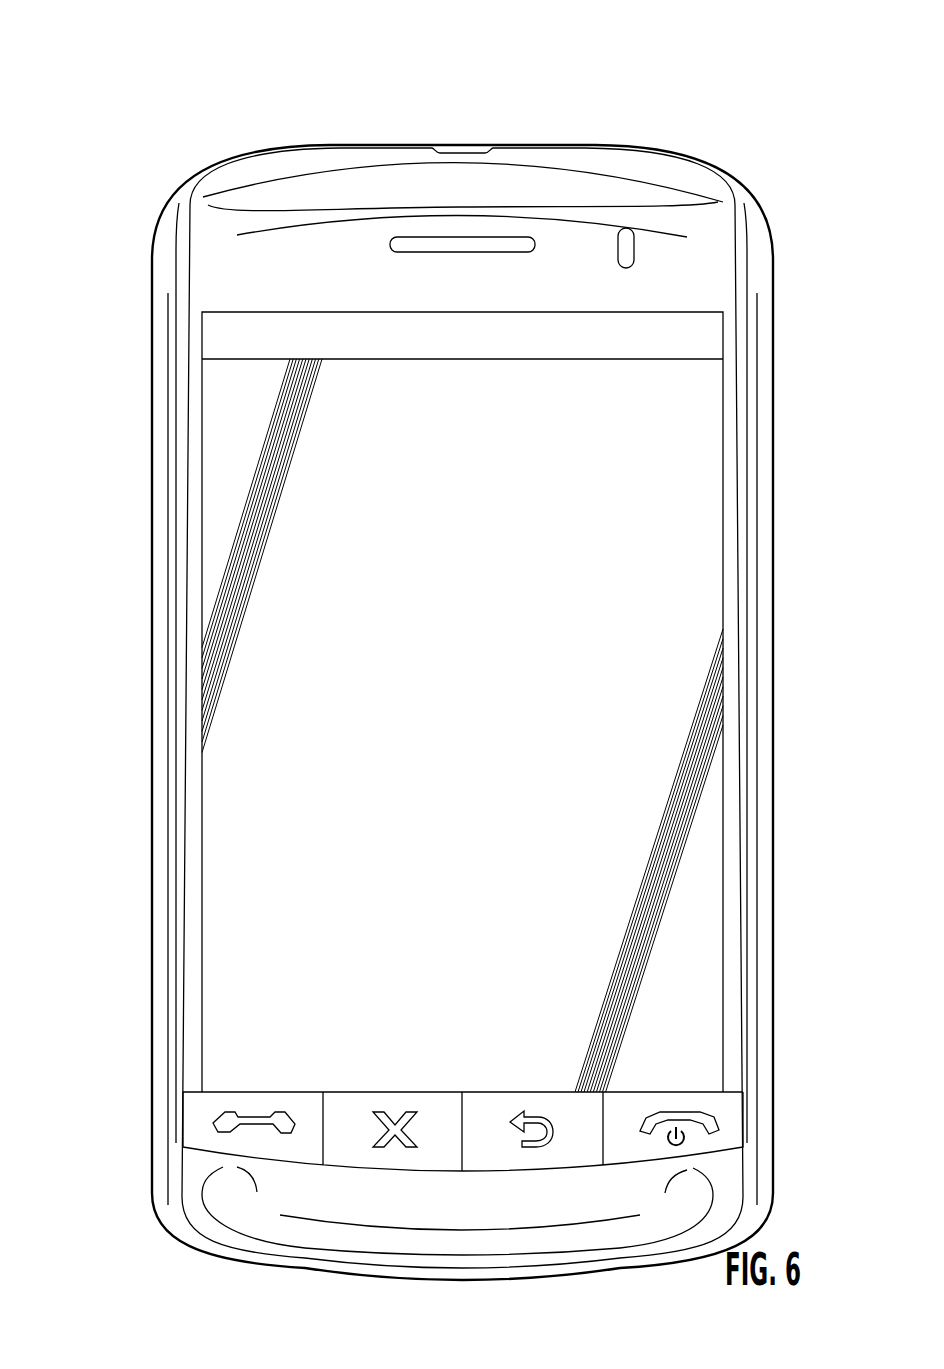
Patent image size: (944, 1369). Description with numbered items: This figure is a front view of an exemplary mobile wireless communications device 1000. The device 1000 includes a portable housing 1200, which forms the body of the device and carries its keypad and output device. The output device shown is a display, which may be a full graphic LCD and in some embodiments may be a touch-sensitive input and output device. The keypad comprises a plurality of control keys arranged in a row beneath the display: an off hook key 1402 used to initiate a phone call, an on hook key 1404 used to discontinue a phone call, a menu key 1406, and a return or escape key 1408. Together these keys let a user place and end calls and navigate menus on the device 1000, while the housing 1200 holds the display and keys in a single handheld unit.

The mobile wireless communications device 1000 is at (252, 96).
The portable housing 1200 is at (150, 358).
The off hook key 1402 is at (225, 1140).
The on hook key 1404 is at (634, 1147).
The menu key 1406 is at (347, 1122).
The return or escape key 1408 is at (575, 1104).